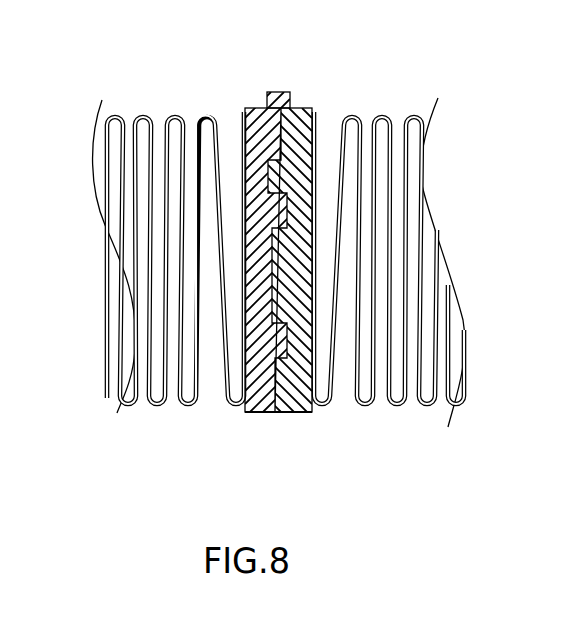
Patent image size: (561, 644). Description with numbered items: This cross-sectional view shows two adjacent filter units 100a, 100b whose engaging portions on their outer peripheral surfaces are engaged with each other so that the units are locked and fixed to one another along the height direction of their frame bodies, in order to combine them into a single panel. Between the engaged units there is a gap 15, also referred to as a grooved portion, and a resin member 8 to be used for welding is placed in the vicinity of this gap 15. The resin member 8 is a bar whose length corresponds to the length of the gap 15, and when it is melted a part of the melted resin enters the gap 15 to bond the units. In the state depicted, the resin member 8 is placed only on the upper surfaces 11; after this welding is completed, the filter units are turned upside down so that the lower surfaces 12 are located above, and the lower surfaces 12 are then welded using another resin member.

The filter unit 100a is at (128, 81).
The filter unit 100b is at (414, 80).
The resin member 8 is at (291, 98).
The upper surface 11 is at (291, 107).
The gap 15 is at (263, 113).
The lower surface 12 is at (297, 413).